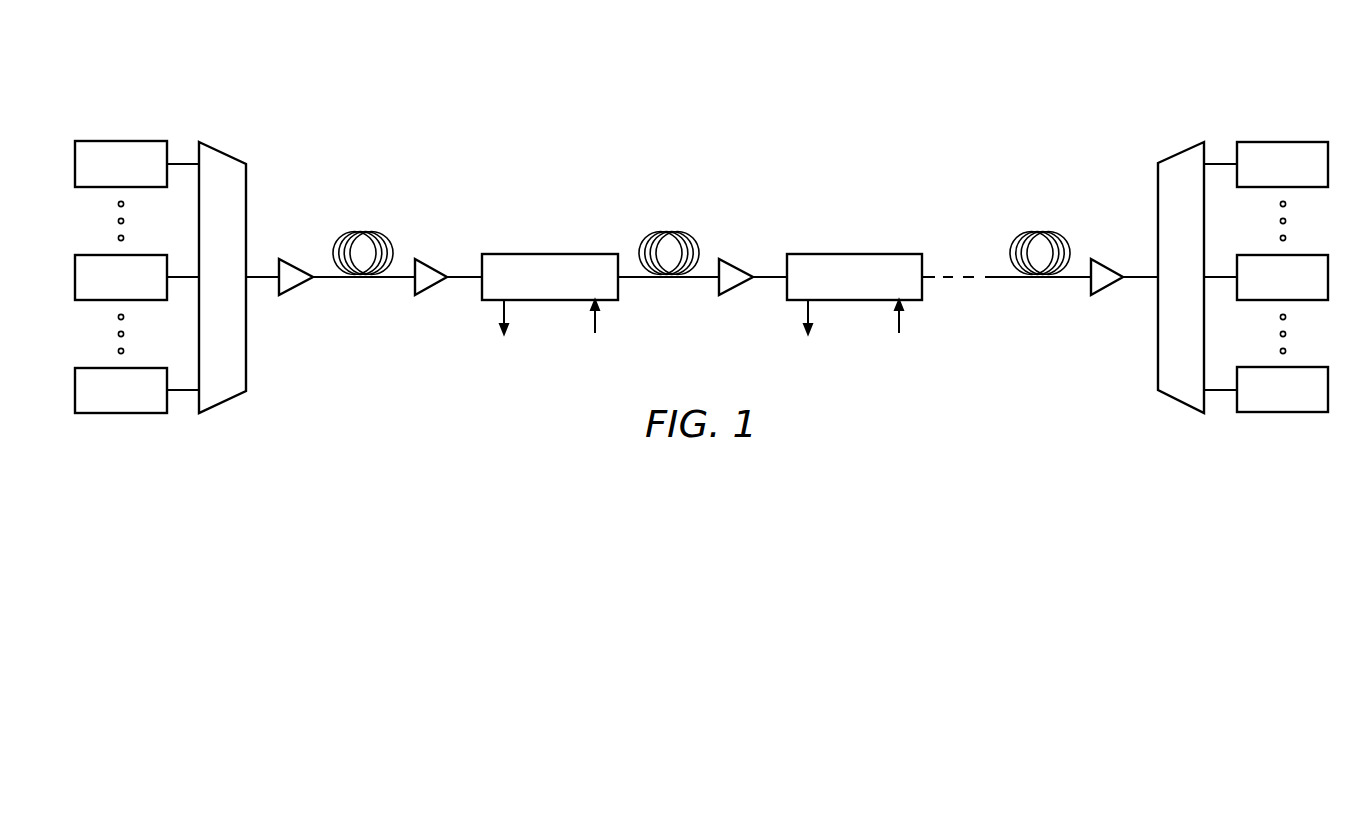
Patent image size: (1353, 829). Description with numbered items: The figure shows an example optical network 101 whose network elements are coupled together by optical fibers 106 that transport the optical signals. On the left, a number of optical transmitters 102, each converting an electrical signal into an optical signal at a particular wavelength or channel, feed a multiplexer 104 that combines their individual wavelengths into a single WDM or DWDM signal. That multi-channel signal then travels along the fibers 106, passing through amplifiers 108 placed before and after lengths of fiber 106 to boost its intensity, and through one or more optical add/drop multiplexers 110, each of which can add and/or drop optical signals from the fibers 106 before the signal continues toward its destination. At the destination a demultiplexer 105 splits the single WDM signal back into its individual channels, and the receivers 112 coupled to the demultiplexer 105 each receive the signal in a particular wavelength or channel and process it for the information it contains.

The optical network 101 is at (177, 93).
The transmitters 102 is at (115, 141).
The multiplexer 104 is at (226, 154).
The demultiplexer 105 is at (1183, 152).
The optical fibers 106 is at (360, 231).
The amplifiers 108 is at (297, 286).
The optical add/drop multiplexers 110 is at (550, 254).
The receivers 112 is at (1290, 142).